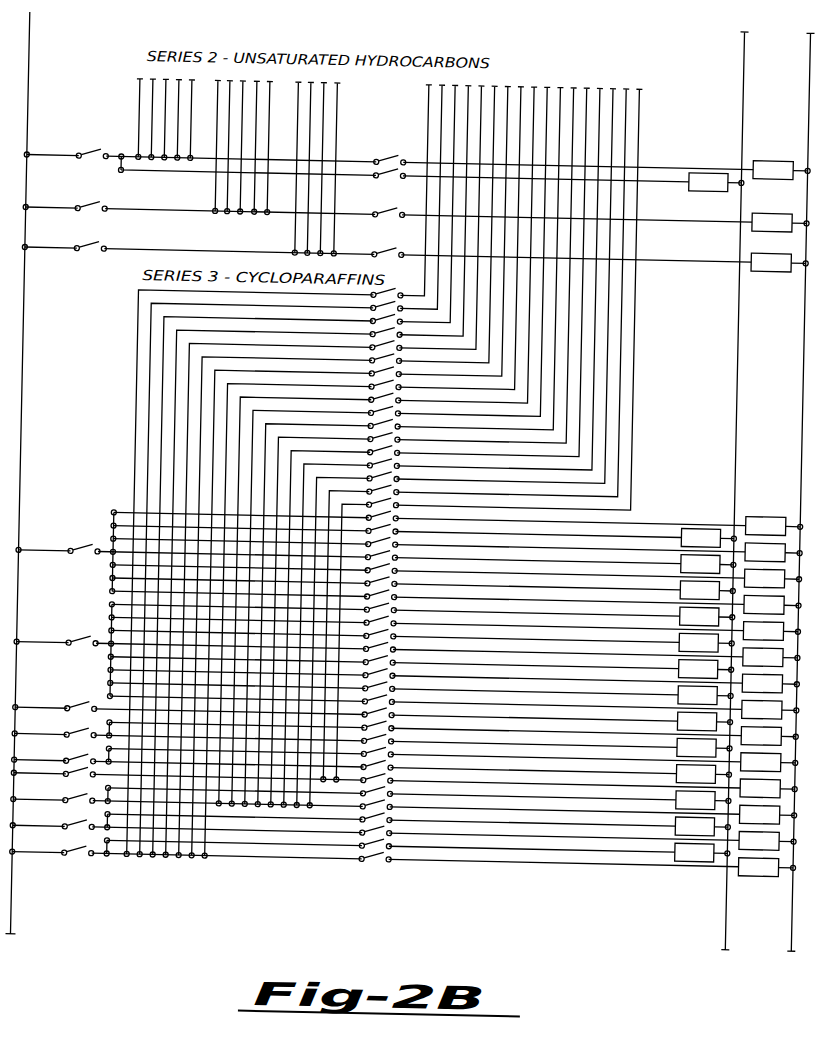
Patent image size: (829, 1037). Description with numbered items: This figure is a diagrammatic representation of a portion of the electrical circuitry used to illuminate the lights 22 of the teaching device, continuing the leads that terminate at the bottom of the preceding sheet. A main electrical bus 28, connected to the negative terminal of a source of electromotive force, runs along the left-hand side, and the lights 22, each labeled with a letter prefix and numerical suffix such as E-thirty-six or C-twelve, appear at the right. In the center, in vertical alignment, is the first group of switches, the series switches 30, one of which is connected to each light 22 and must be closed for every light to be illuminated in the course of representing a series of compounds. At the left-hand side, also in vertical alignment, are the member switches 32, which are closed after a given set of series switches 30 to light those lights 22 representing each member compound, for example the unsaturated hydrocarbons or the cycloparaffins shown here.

The main electrical bus 28 is at (30, 67).
The member switches 32 is at (94, 136).
The series switches 30 is at (400, 124).
The lights 22 is at (716, 157).